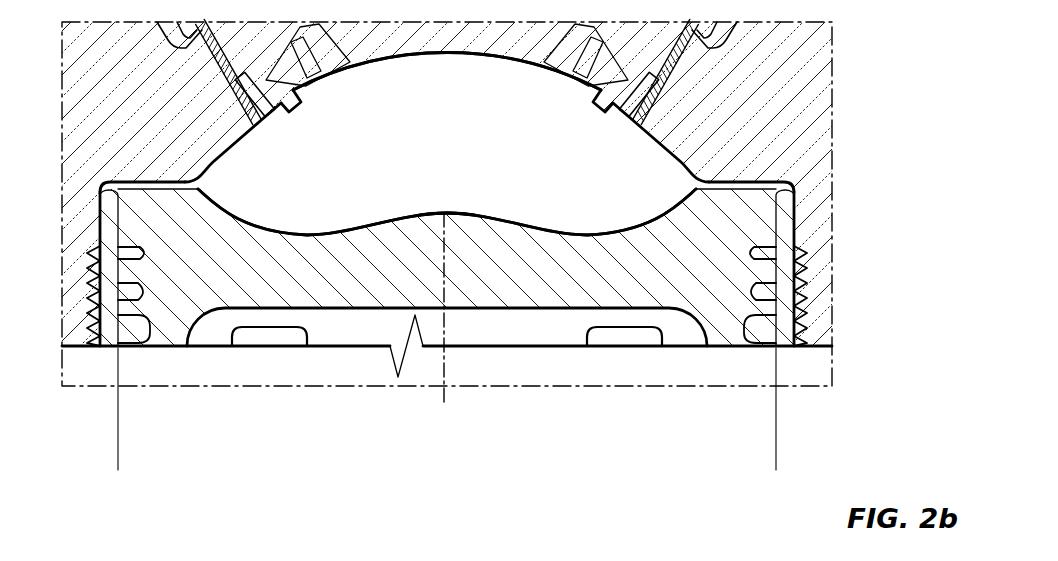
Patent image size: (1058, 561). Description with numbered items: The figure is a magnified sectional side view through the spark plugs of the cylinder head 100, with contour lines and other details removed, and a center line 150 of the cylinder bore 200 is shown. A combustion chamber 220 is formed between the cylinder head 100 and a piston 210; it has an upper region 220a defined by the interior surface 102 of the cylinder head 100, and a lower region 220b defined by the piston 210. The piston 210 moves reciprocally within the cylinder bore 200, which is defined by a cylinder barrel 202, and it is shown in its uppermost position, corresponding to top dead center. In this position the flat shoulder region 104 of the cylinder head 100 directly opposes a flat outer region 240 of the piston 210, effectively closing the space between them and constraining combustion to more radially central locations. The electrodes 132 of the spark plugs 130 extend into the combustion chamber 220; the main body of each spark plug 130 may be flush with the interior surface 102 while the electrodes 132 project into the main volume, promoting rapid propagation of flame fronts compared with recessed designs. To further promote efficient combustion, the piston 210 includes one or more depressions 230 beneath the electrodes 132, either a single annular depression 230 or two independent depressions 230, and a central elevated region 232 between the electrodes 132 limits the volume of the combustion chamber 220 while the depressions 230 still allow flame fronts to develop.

The cylinder head 100 is at (760, 66).
The interior surface 102 is at (410, 57).
The flat shoulder region 104 is at (161, 178).
The spark plug 130 is at (242, 60).
The electrode 132 is at (299, 100).
The center line 150 is at (448, 403).
The cylinder bore 200 is at (764, 459).
The cylinder barrel 202 is at (110, 334).
The piston 210 is at (477, 277).
The combustion chamber 220 is at (424, 150).
The upper region 220a is at (500, 123).
The lower region 220b is at (388, 199).
The depression 230 is at (309, 233).
The central elevated region 232 is at (446, 210).
The flat outer region 240 is at (153, 194).